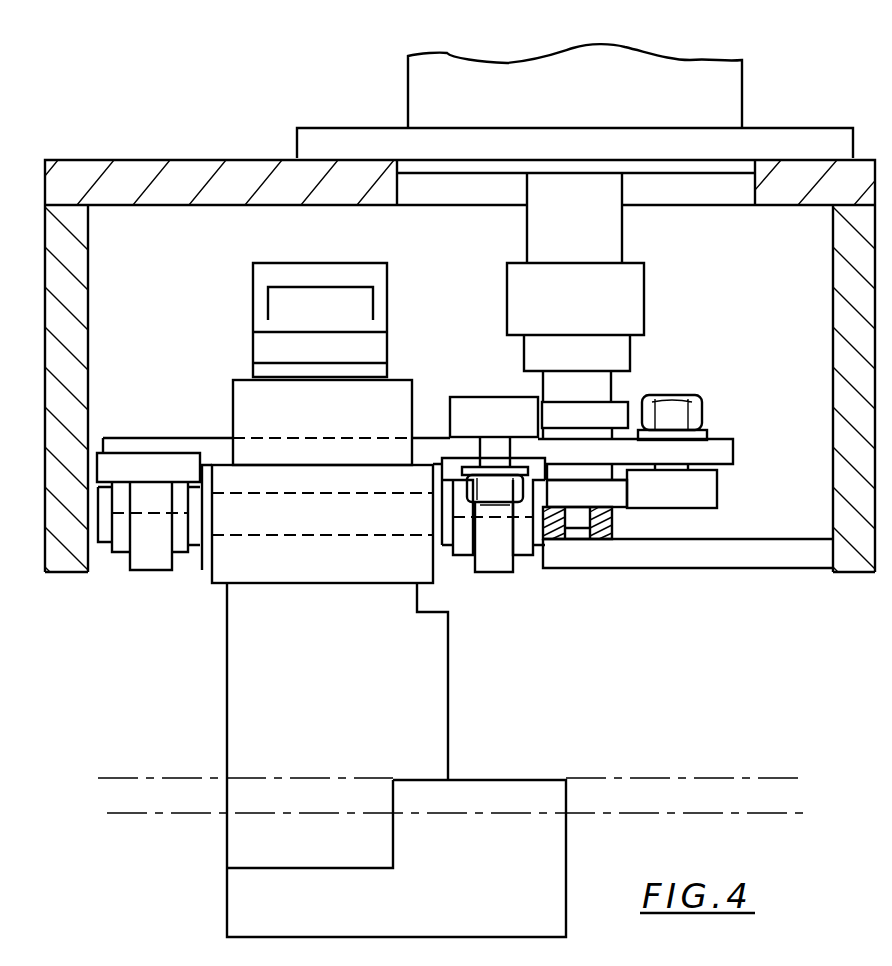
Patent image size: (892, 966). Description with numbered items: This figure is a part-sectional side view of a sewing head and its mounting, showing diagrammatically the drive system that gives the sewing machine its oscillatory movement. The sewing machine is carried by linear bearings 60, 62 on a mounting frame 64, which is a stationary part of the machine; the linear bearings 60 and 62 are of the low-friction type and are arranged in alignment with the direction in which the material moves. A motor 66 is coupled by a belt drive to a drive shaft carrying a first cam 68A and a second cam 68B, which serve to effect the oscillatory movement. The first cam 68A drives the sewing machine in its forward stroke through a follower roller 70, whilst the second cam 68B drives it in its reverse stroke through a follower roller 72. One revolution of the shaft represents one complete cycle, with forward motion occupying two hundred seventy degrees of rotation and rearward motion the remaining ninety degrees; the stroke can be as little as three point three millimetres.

The linear bearing 60 is at (150, 546).
The linear bearing 62 is at (498, 553).
The mounting frame 64 is at (80, 348).
The motor 66 is at (728, 80).
The first cam 68A is at (617, 407).
The second cam 68B is at (603, 487).
The follower roller 70 is at (460, 407).
The follower roller 72 is at (707, 488).